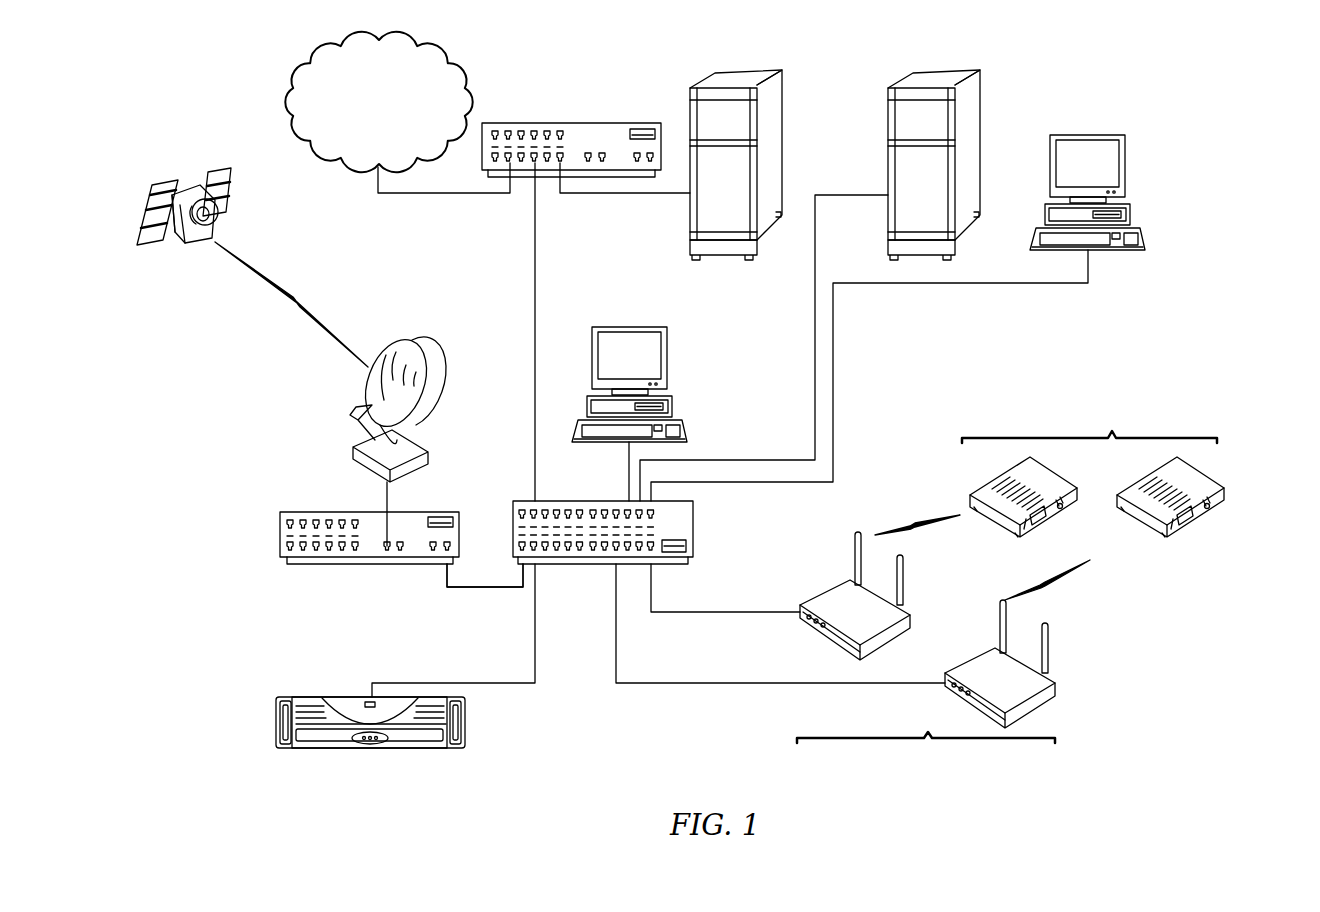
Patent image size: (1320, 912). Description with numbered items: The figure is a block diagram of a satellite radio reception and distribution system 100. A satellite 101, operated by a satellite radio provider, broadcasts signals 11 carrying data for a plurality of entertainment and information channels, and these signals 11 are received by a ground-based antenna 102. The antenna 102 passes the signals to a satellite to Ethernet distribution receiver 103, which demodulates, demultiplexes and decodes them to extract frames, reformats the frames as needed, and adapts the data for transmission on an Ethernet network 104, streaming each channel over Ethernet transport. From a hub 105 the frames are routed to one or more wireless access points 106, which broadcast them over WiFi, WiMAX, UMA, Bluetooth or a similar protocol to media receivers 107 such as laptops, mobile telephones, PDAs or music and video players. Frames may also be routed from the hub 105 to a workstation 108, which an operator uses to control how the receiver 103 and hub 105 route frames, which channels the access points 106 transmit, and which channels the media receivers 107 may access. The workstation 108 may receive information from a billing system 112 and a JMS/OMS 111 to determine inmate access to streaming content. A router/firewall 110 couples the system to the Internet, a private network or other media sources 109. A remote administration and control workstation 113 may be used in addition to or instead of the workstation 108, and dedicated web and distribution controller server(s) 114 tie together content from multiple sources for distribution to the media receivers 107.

The satellite radio reception and distribution system 100 is at (1193, 630).
The satellite 101 is at (164, 182).
The signals 11 is at (298, 302).
The ground-based antenna 102 is at (410, 342).
The satellite to Ethernet distribution receiver 103 is at (340, 565).
The Ethernet network 104 is at (485, 588).
The hub 105 is at (694, 530).
The wireless access points 106 is at (926, 675).
The media receivers 107 is at (1049, 480).
The workstation 108 is at (668, 358).
The Internet or private network or other media sources 109 is at (291, 94).
The router/firewall 110 is at (590, 122).
The JMS/OMS 111 is at (780, 114).
The billing system 112 is at (977, 117).
The remote administration and control workstation 113 is at (1126, 167).
The web and distribution controller server(s) 114 is at (340, 750).